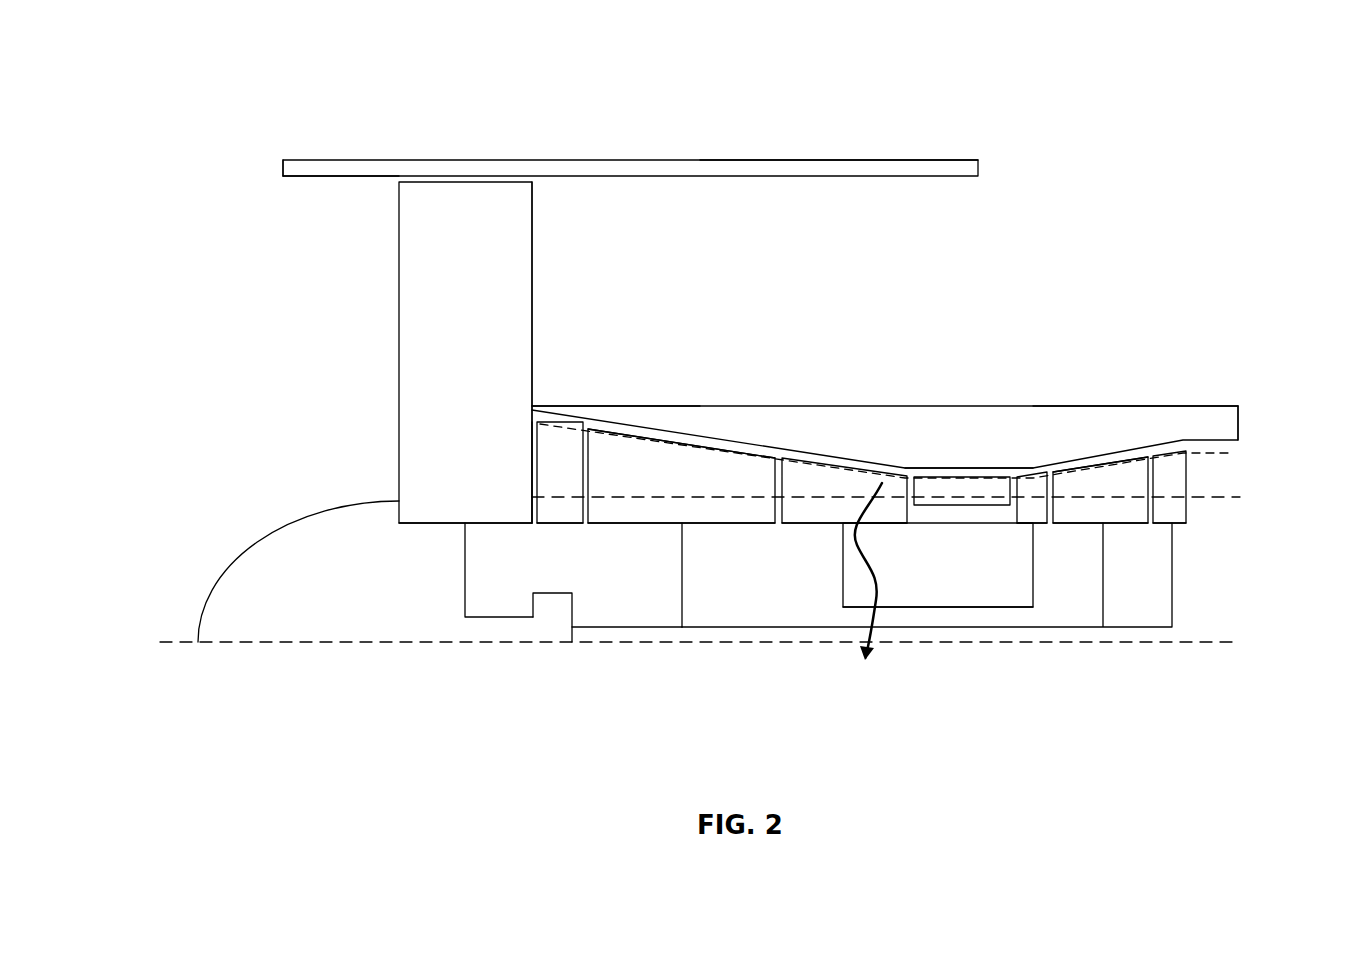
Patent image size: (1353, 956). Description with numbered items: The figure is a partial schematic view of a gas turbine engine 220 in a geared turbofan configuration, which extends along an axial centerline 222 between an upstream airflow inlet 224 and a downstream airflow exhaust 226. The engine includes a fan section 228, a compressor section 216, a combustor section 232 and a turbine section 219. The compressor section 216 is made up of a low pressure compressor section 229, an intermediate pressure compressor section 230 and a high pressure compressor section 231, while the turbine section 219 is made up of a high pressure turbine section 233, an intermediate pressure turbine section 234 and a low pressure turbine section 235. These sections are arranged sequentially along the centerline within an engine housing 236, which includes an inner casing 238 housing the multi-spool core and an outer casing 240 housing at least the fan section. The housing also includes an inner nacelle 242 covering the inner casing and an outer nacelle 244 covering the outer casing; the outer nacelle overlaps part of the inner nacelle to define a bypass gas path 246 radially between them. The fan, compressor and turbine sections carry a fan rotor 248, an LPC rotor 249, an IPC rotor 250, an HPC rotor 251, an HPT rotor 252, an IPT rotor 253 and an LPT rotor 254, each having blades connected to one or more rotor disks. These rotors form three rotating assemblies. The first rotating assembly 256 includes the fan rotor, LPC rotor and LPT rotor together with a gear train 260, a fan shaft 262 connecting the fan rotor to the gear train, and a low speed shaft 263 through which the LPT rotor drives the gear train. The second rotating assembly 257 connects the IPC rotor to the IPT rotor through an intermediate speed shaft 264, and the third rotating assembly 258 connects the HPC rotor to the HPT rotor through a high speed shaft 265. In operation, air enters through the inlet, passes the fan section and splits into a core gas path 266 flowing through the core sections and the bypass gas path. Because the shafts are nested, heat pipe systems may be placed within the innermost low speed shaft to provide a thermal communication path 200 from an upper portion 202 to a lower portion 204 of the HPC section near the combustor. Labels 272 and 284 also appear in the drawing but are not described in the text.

The thermal communication path 200 is at (878, 588).
The upper portion 202 is at (895, 460).
The lower portion 204 is at (891, 655).
The compressor section 216 is at (645, 350).
The turbine section 219 is at (1143, 357).
The gas turbine engine 220 is at (250, 88).
The axial centerline 222 is at (1217, 647).
The upstream airflow inlet 224 is at (288, 177).
The downstream airflow exhaust 226 is at (1232, 452).
The fan section 228 is at (538, 272).
The low pressure compressor (LPC) section 229 is at (562, 415).
The intermediate pressure compressor (IPC) section 230 is at (655, 425).
The high pressure compressor (HPC) section 231 is at (831, 457).
The combustor section 232 is at (942, 465).
The high pressure turbine (HPT) section 233 is at (1027, 465).
The intermediate pressure turbine (IPT) section 234 is at (1095, 455).
The low pressure turbine (LPT) section 235 is at (1167, 445).
The engine housing 236 is at (1130, 218).
The inner casing 238 is at (742, 435).
The outer casing 240 is at (651, 172).
The inner nacelle 242 is at (1228, 400).
The outer nacelle 244 is at (845, 158).
The bypass gas path 246 is at (765, 288).
The fan rotor 248 is at (442, 525).
The LPC rotor 249 is at (557, 525).
The IPC rotor 250 is at (648, 525).
The HPC rotor 251 is at (808, 525).
The HPT rotor 252 is at (1024, 525).
The IPT rotor 253 is at (1088, 525).
The LPT rotor 254 is at (1180, 526).
The first rotating assembly 256 is at (490, 630).
The second rotating assembly 257 is at (675, 595).
The third rotating assembly 258 is at (838, 587).
The gear train 260 is at (556, 632).
The fan shaft 262 is at (465, 603).
The low speed shaft 263 is at (610, 628).
The intermediate speed shaft 264 is at (740, 628).
The high speed shaft 265 is at (937, 607).
The core gas path 266 is at (1205, 478).
The fan aft face 272 is at (532, 462).
The fan module 284 is at (490, 366).